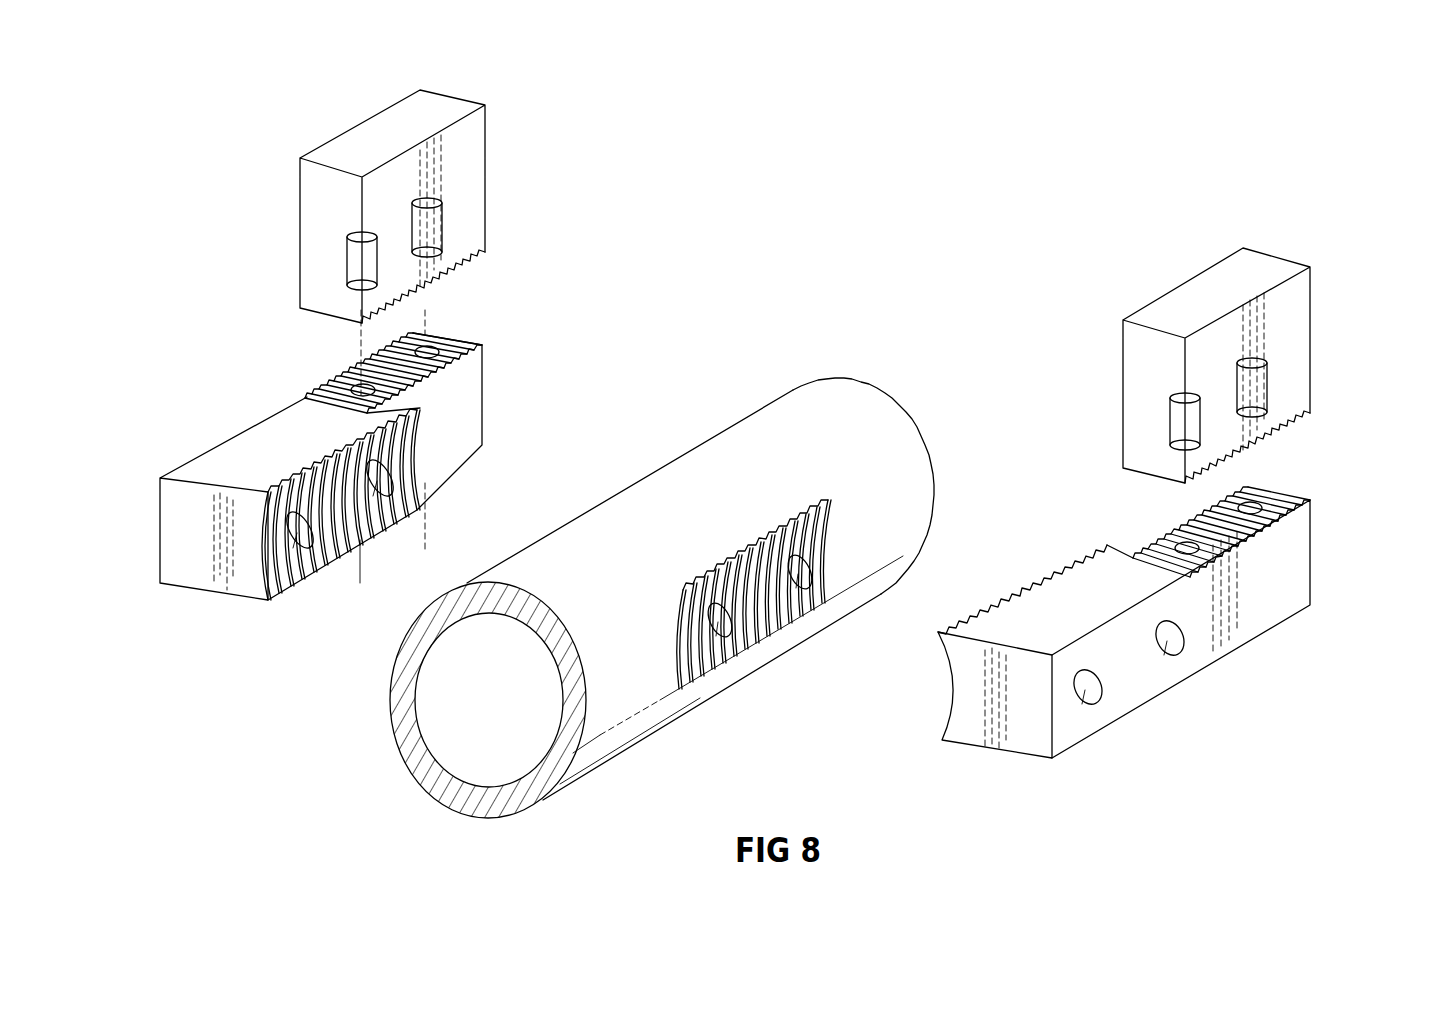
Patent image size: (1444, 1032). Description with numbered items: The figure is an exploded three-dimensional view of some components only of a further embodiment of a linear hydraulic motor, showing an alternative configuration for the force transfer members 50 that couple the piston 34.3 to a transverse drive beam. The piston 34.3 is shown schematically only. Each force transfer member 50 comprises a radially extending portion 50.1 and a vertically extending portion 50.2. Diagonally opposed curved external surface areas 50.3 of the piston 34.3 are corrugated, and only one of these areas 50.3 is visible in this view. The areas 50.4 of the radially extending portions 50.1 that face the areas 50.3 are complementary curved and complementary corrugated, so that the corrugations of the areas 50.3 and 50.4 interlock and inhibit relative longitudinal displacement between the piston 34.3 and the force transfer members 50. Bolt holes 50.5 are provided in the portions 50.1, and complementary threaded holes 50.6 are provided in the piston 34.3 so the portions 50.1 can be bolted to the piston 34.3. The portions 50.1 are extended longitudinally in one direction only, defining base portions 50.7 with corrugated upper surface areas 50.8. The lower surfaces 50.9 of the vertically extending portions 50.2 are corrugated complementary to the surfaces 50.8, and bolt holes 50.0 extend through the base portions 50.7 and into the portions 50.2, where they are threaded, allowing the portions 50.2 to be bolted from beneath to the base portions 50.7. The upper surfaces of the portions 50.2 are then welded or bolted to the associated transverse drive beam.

The piston 34.3 is at (817, 407).
The force transfer members 50 is at (124, 419).
The bolt holes 50.0 is at (335, 383).
The radially extending portion 50.1 is at (205, 573).
The vertically extending portion 50.2 is at (318, 213).
The curved external surface areas 50.3 is at (748, 550).
The areas of the portions 50.4 is at (340, 523).
The bolt holes 50.5 is at (382, 472).
The threaded holes 50.6 is at (800, 590).
The base portions 50.7 is at (462, 393).
The corrugated upper surface areas 50.8 is at (442, 350).
The lower surfaces 50.9 is at (479, 273).